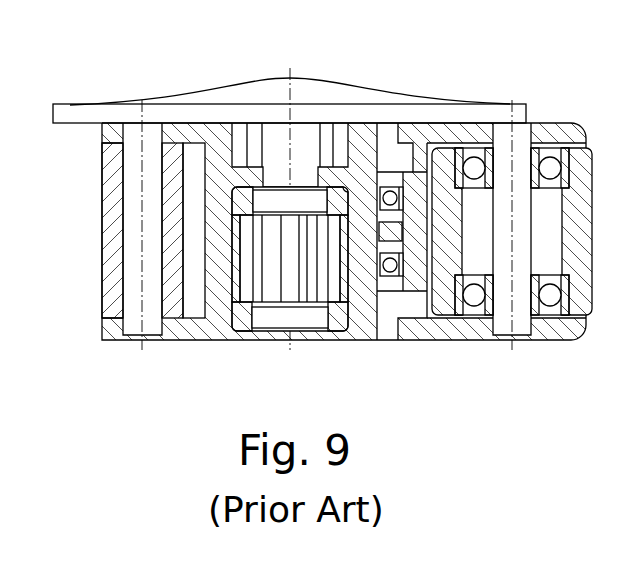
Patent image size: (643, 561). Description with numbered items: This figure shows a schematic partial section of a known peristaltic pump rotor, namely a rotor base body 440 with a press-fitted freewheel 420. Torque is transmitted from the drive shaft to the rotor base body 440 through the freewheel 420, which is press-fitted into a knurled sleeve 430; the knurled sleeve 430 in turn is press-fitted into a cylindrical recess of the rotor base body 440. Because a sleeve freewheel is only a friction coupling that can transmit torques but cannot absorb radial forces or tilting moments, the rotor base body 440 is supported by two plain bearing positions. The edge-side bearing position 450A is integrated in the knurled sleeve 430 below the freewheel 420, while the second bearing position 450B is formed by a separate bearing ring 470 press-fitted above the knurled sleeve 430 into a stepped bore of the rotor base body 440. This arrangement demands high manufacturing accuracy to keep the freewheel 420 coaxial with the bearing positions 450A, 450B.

The freewheel 420 is at (300, 260).
The knurled sleeve 430 is at (233, 262).
The rotor base body 440 is at (218, 182).
The bearing position 450A is at (260, 315).
The bearing position 450B is at (260, 196).
The bearing ring 470 is at (332, 200).